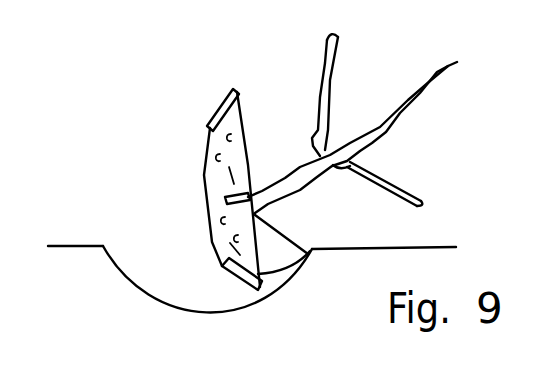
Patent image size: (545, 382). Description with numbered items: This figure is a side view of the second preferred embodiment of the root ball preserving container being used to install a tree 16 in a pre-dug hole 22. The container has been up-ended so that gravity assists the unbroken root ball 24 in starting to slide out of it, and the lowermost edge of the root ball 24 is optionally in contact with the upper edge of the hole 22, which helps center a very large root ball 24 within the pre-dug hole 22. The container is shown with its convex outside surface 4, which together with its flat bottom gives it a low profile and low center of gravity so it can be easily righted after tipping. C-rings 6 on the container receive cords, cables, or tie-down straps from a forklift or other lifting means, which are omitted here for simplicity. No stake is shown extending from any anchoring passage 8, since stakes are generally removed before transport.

The convex outside surface 4 is at (237, 117).
The C-ring 6 is at (205, 168).
The anchoring passage 8 is at (231, 93).
The tree 16 is at (407, 107).
The pre-dug hole 22 is at (175, 292).
The root ball 24 is at (295, 257).